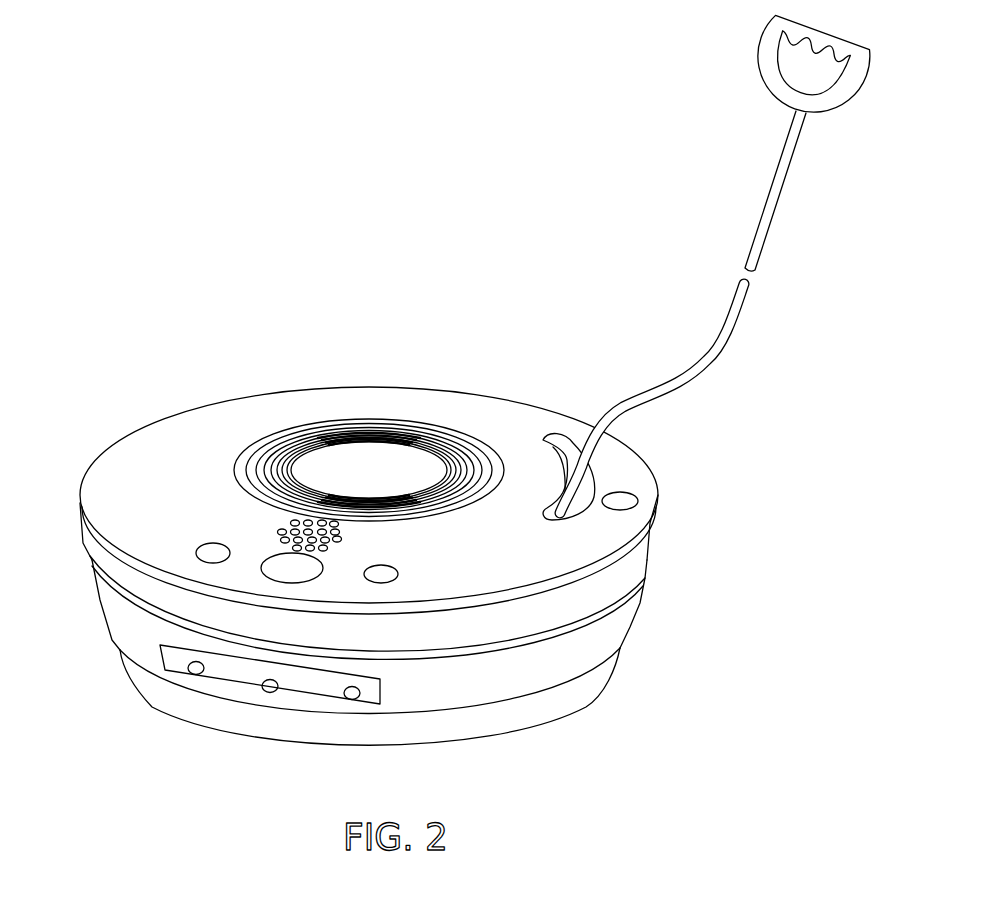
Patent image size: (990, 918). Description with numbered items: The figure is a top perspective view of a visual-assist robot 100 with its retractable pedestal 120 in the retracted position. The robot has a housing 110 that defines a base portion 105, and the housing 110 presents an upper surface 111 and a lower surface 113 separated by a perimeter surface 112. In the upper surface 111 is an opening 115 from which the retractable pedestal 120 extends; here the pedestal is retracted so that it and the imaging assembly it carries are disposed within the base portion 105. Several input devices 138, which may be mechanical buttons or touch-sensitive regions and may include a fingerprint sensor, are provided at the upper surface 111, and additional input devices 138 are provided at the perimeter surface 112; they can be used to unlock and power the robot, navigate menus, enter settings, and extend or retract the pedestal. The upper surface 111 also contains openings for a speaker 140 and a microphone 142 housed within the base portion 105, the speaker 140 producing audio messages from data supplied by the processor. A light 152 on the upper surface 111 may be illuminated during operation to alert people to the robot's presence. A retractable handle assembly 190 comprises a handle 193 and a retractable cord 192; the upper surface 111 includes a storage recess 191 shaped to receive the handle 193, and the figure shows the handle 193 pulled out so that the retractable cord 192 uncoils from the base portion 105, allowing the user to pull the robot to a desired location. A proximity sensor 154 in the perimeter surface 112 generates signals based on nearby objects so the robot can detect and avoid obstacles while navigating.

The visual-assist robot 100 is at (487, 395).
The base portion 105 is at (342, 524).
The housing 110 is at (369, 454).
The upper surface 111 is at (192, 432).
The perimeter surface 112 is at (113, 620).
The lower surface 113 is at (155, 701).
The opening 115 is at (369, 435).
The retractable pedestal 120 is at (378, 450).
The input devices 138 is at (197, 549).
The speaker 140 is at (231, 512).
The microphone 142 is at (267, 524).
The light 152 is at (638, 502).
The proximity sensor 154 is at (270, 693).
The retractable handle assembly 190 is at (754, 257).
The storage recess 191 is at (605, 475).
The retractable cord 192 is at (766, 244).
The handle 193 is at (872, 62).